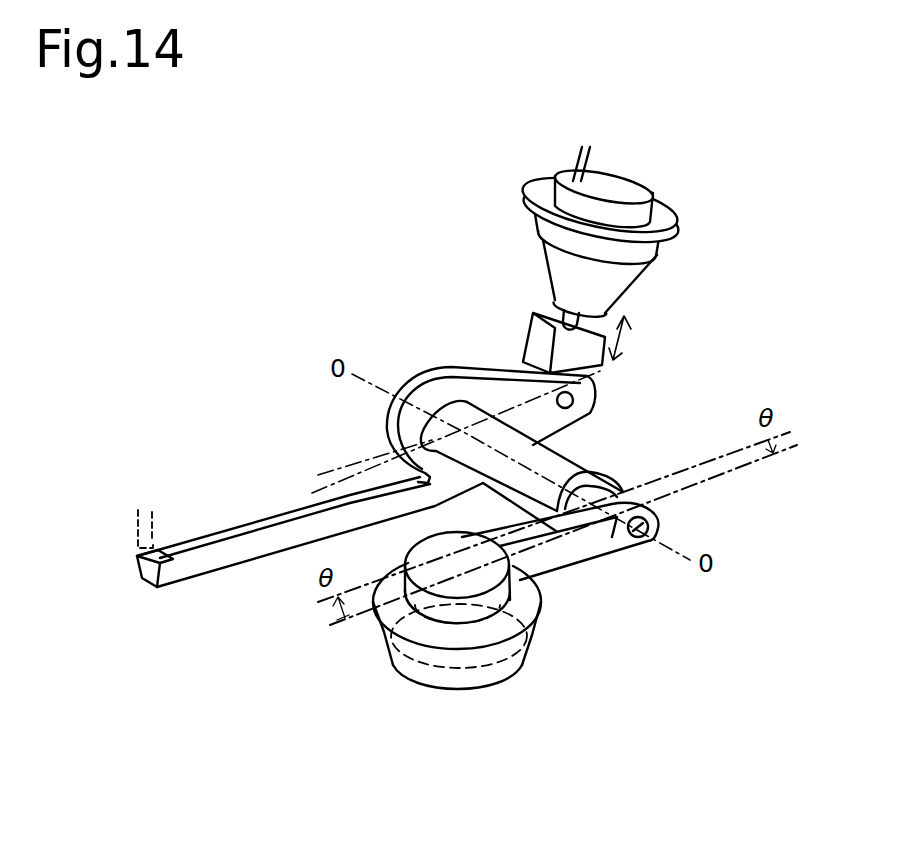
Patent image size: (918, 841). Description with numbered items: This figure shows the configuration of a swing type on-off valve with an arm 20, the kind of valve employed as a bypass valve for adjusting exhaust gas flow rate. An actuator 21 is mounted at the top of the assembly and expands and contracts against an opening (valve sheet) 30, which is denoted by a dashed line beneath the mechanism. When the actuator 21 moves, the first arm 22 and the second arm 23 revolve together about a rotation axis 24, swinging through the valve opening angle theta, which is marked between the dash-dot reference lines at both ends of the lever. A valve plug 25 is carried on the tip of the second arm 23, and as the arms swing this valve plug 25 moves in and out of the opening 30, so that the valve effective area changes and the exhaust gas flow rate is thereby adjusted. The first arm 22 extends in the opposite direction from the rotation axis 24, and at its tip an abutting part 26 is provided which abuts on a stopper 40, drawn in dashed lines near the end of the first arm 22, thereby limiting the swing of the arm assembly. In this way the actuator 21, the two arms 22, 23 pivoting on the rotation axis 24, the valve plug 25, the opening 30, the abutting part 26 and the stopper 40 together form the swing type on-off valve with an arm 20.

The swing type on-off valve with an arm 20 is at (354, 300).
The actuator 21 is at (608, 273).
The first arm 22 is at (246, 534).
The second arm 23 is at (578, 555).
The rotation axis 24 is at (657, 520).
The valve plug 25 is at (483, 632).
The abutting part 26 is at (154, 556).
The opening (valve sheet) 30 is at (500, 690).
The stopper 40 is at (133, 528).